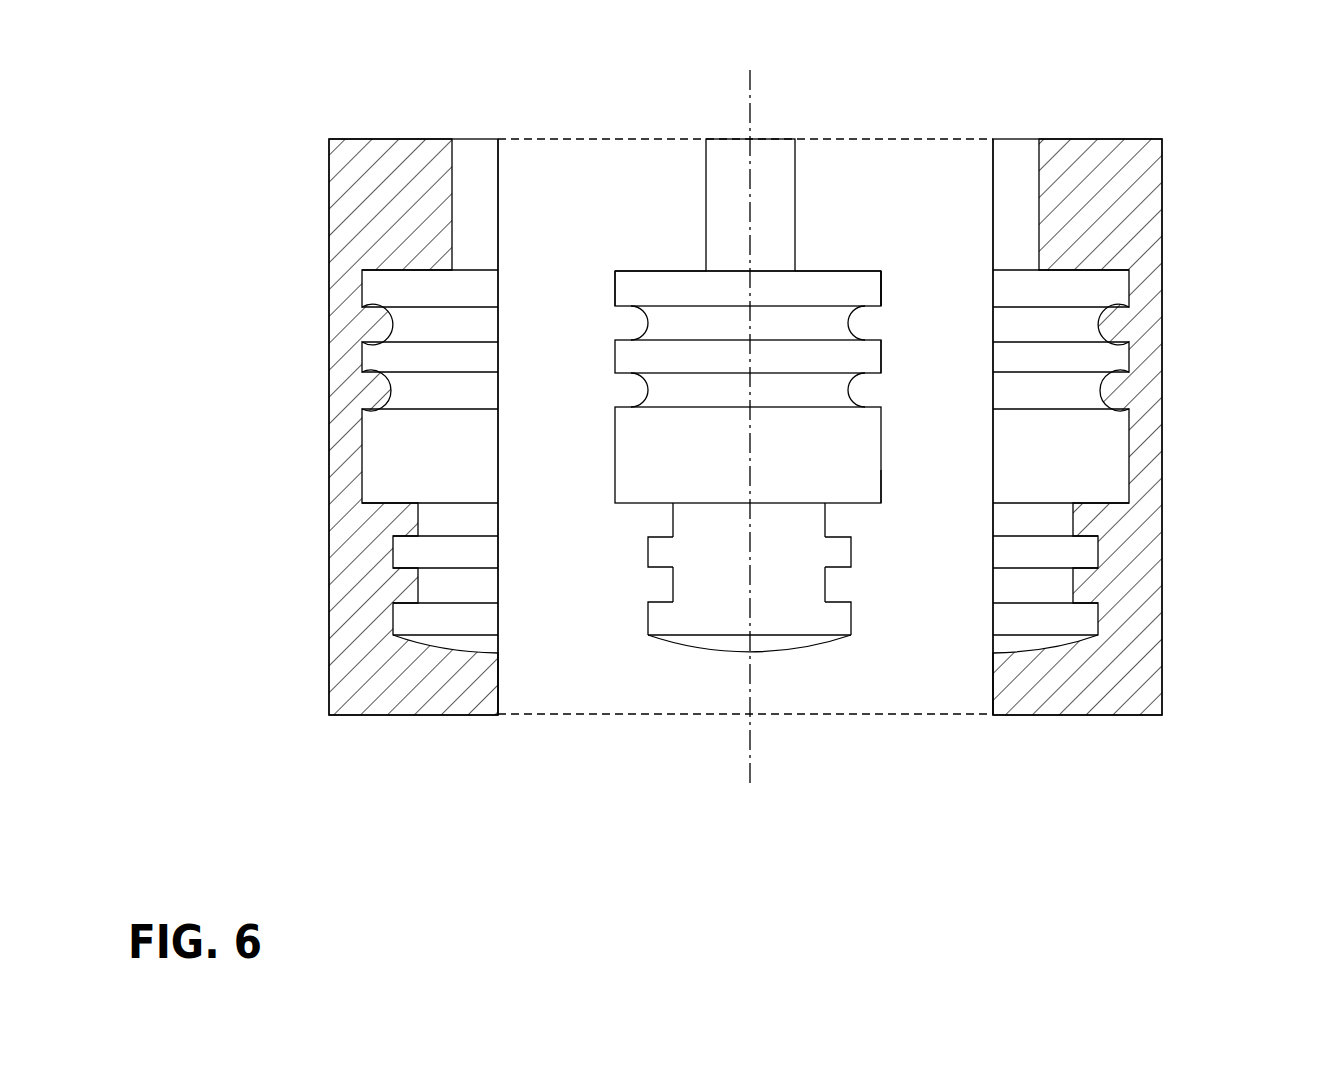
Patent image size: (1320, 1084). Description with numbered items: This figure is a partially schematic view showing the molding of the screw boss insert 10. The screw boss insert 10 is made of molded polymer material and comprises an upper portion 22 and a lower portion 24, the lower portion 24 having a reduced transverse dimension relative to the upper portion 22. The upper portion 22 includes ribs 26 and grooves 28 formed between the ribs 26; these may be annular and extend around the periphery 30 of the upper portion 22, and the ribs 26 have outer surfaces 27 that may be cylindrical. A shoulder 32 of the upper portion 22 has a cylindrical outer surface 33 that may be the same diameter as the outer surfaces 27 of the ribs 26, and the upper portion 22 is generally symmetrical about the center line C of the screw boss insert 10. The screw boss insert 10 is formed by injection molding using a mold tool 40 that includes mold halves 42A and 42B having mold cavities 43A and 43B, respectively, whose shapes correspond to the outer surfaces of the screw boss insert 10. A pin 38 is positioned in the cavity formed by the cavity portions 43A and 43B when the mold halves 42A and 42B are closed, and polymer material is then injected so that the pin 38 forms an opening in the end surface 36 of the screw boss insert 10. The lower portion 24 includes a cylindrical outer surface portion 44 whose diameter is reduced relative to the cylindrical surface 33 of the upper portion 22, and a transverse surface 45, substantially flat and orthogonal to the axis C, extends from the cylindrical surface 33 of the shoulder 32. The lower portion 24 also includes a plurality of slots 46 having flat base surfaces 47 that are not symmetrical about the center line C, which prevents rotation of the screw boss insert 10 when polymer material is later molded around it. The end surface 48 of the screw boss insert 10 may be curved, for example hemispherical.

The screw boss insert 10 is at (684, 652).
The upper portion 22 is at (884, 270).
The lower portion 24 is at (853, 632).
The ribs 26 is at (613, 283).
The outer surfaces 27 is at (883, 350).
The grooves 28 is at (637, 323).
The periphery 30 is at (615, 270).
The shoulder 32 is at (881, 492).
The cylindrical outer surface 33 is at (881, 438).
The end surface 36 is at (813, 270).
The pin 38 is at (797, 167).
The mold tool 40 is at (1176, 332).
The mold half 42A is at (425, 138).
The mold half 42B is at (1065, 137).
The mold cavity 43A is at (499, 597).
The mold cavity 43B is at (926, 471).
The cylindrical outer surface portion 44 is at (795, 622).
The transverse surface 45 is at (665, 506).
The slots 46 is at (660, 525).
The flat base surfaces 47 is at (665, 514).
The end surface 48 is at (727, 653).
The center line C is at (751, 775).